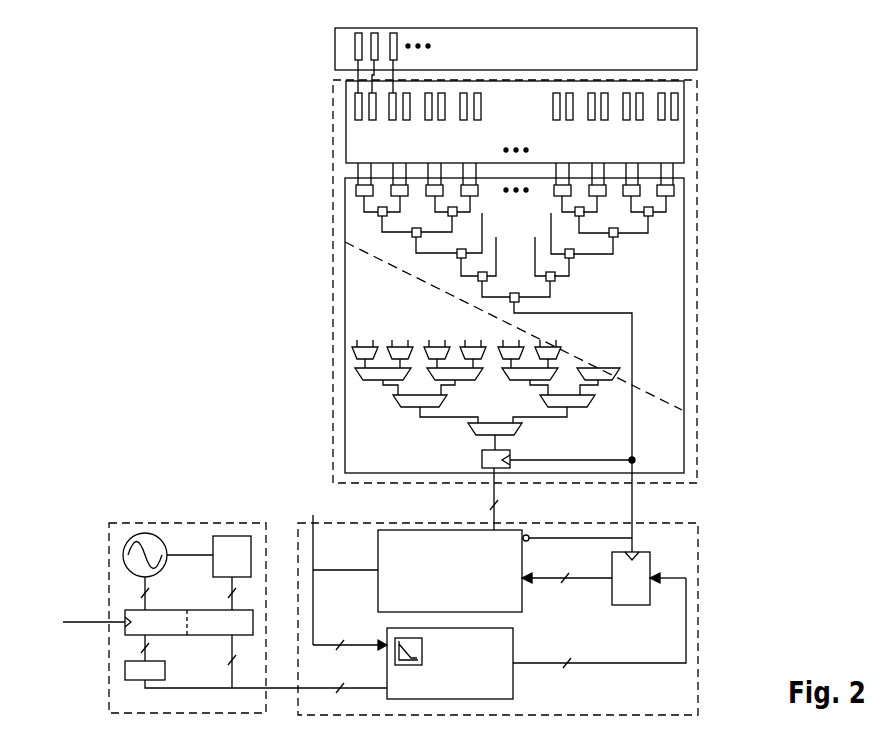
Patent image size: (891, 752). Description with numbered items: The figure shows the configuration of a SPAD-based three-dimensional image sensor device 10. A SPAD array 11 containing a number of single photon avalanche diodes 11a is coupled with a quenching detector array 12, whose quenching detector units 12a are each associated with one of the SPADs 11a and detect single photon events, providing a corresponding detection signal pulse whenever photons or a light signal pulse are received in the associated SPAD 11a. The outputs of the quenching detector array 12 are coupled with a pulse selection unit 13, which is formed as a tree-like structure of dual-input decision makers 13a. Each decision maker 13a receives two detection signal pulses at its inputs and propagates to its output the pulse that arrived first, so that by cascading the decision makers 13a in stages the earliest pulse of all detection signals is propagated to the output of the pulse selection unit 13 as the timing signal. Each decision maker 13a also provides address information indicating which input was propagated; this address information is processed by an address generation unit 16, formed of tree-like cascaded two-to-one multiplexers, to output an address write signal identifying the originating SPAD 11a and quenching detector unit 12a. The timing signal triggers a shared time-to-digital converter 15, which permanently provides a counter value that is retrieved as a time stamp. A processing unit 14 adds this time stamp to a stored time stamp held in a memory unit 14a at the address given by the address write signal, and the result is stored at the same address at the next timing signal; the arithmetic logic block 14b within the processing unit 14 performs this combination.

The 3D SPAD-based image sensor device 10 is at (778, 92).
The SPAD array 11 is at (511, 60).
The single photon avalanche diodes (SPADs) 11a is at (390, 55).
The quenching detector array 12 is at (548, 122).
The quenching detector units 12a is at (678, 106).
The pulse selection unit 13 is at (520, 357).
The dual-input decision makers 13a is at (675, 192).
The processing unit 14 is at (496, 603).
The memory unit 14a is at (378, 552).
The arithmetic logic unit (ALU) 14b is at (372, 672).
The time-to-digital converter 15 is at (109, 565).
The address generation unit 16 is at (356, 271).